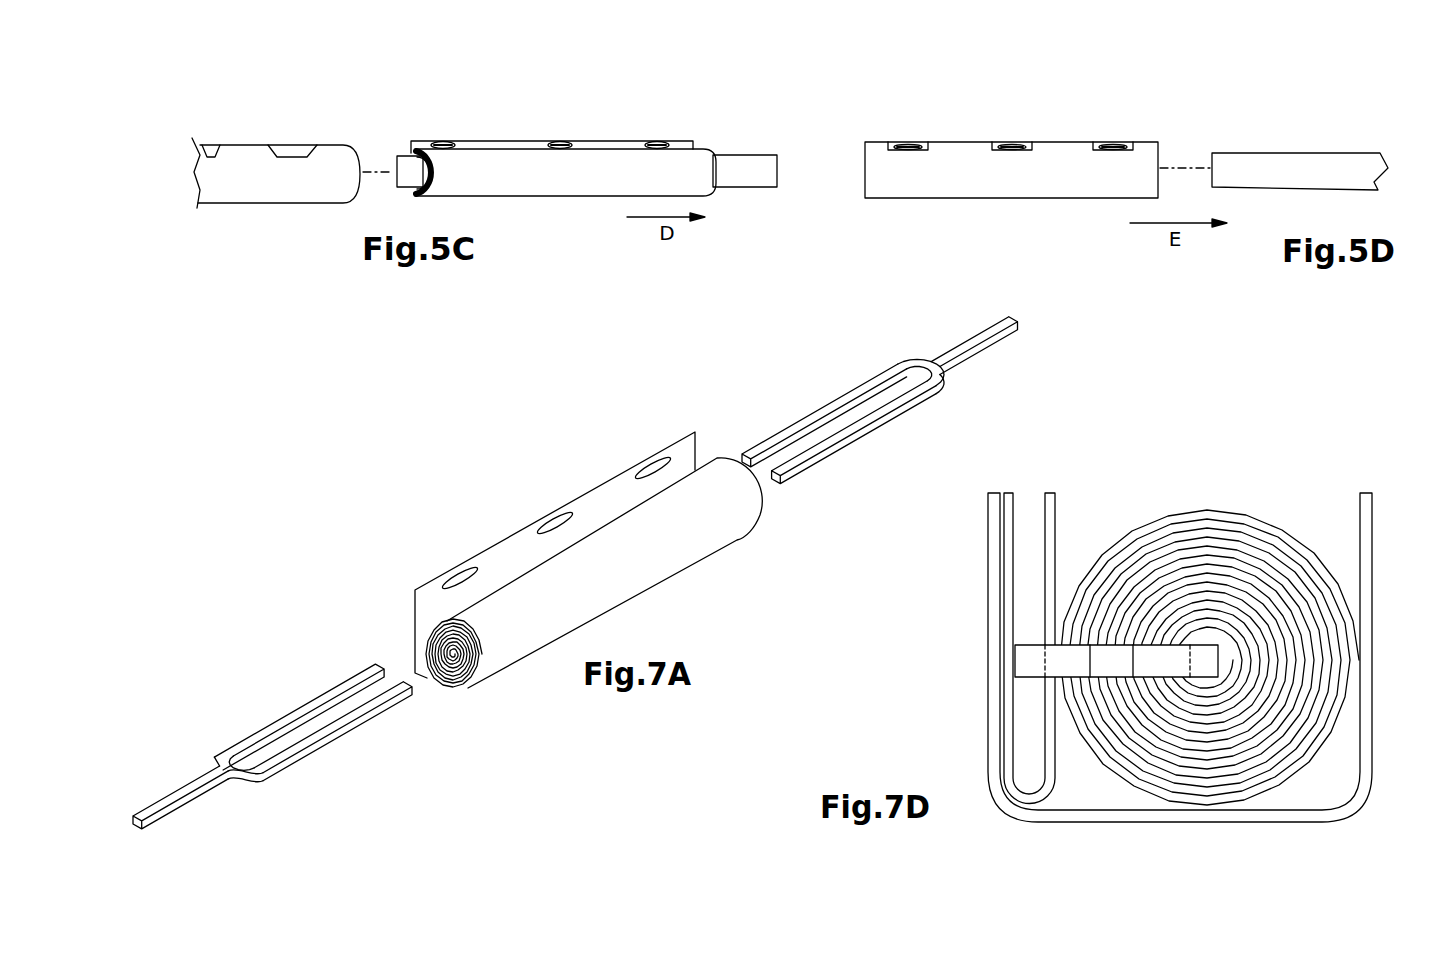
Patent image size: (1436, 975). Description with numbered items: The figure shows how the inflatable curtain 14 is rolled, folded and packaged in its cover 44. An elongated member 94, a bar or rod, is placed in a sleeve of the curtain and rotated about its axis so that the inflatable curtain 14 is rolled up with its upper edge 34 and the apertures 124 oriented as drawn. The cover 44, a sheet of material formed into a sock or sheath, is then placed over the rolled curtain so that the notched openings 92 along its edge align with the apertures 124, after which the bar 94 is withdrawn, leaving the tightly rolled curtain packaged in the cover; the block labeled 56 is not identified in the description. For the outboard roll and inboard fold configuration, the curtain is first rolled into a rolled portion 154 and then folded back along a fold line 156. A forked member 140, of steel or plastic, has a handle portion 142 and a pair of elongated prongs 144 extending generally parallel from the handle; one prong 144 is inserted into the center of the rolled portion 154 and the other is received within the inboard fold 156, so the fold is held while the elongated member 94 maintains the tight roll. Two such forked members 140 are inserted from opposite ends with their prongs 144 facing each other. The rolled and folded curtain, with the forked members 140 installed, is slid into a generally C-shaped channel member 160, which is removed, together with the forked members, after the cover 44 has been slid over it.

In FIG. 5C, the inflatable curtain 14 is at (542, 177).
In FIG. 7A, the inflatable curtain 14 is at (594, 567).
In FIG. 7D, the inflatable curtain 14 is at (1209, 655).
In FIG. 5C, the upper edge 34 is at (603, 141).
In FIG. 7A, the upper edge 34 is at (555, 555).
In FIG. 5C, the cover 44 is at (277, 178).
In FIG. 5D, the block 56 is at (972, 170).
In FIG. 5C, the openings 92 is at (208, 148).
In FIG. 5D, the openings 92 is at (922, 140).
In FIG. 5C, the elongated member 94 is at (753, 168).
In FIG. 5D, the elongated member 94 is at (1318, 170).
In FIG. 5C, the apertures 124 is at (447, 145).
In FIG. 5D, the apertures 124 is at (903, 142).
In FIG. 7A, the apertures 124 is at (662, 457).
In FIG. 7A, the forked member 140 is at (593, 576).
In FIG. 7D, the forked member 140 is at (1173, 635).
In FIG. 7A, the handle portion 142 is at (190, 788).
In FIG. 7D, the handle portion 142 is at (1108, 660).
In FIG. 7A, the prongs 144 is at (327, 693).
In FIG. 7D, the prongs 144 is at (1030, 657).
In FIG. 7D, the rolled portion 154 is at (1178, 750).
In FIG. 7A, the fold line 156 is at (428, 667).
In FIG. 7D, the fold line 156 is at (1030, 803).
In FIG. 7D, the channel member 160 is at (1370, 573).